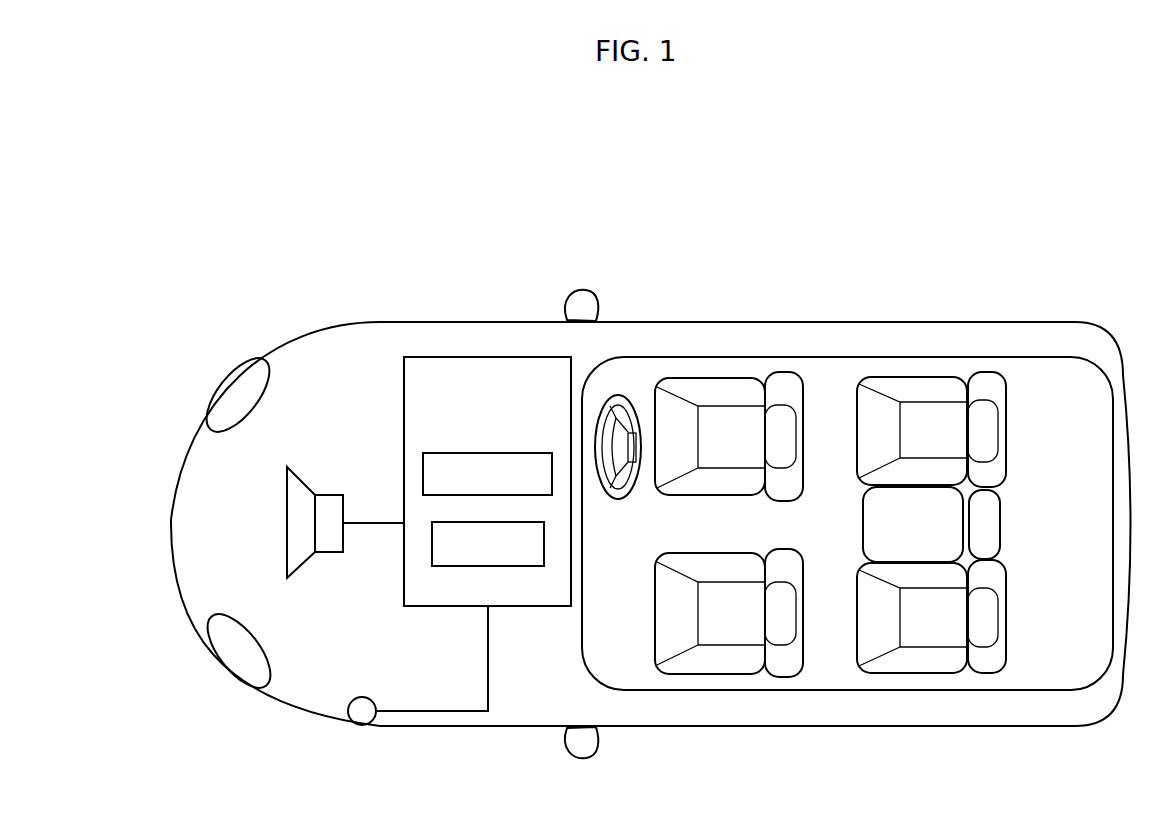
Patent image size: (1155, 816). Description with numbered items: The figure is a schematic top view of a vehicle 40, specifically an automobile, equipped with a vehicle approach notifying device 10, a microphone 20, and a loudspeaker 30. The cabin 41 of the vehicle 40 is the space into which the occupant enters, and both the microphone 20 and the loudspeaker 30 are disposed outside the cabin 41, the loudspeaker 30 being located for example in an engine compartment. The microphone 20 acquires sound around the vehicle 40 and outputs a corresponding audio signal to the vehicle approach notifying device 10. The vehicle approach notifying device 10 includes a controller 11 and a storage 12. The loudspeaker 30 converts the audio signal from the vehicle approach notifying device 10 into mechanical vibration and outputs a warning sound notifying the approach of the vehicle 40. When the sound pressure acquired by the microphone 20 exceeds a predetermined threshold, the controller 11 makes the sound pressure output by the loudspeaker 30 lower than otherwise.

The vehicle approach notifying device 10 is at (506, 353).
The controller 11 is at (489, 451).
The storage 12 is at (488, 521).
The microphone 20 is at (366, 697).
The loudspeaker 30 is at (329, 493).
The vehicle 40 is at (1016, 257).
The cabin 41 is at (835, 357).